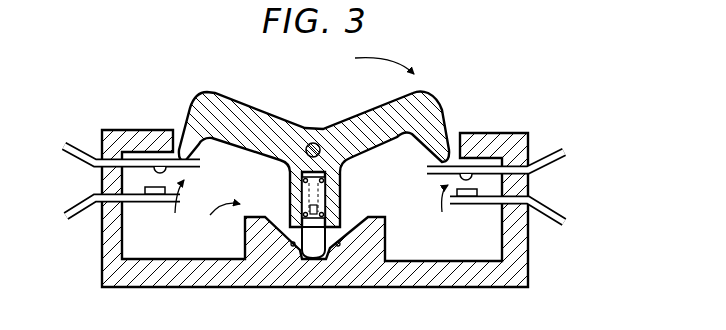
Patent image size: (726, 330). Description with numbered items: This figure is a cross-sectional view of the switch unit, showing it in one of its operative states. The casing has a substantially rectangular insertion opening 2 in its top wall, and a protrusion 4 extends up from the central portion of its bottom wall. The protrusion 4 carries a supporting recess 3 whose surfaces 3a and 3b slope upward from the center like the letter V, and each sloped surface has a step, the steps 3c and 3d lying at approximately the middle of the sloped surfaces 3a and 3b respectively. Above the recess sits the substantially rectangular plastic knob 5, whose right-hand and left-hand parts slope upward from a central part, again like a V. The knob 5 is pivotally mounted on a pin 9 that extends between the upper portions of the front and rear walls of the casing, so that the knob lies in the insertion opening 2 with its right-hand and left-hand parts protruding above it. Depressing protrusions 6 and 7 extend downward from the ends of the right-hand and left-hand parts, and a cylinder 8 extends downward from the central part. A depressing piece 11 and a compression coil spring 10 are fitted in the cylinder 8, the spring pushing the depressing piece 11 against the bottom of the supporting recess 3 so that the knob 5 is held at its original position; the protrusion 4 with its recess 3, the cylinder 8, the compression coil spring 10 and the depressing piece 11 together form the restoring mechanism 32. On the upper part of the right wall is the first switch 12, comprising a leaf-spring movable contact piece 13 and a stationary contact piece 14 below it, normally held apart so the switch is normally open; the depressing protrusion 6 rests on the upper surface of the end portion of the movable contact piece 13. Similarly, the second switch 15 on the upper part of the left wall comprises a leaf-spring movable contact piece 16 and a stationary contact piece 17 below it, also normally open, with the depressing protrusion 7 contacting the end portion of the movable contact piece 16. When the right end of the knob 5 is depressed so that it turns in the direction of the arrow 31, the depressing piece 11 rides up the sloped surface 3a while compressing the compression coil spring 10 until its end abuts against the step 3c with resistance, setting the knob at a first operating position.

The insertion opening 2 is at (178, 140).
The supporting recess 3 is at (343, 238).
The sloped surface 3a is at (259, 251).
The sloped surface 3b is at (370, 214).
The step 3c is at (311, 250).
The step 3d is at (336, 250).
The protrusion 4 is at (386, 222).
The knob 5 is at (313, 128).
The depressing protrusion 6 is at (422, 147).
The depressing protrusion 7 is at (206, 140).
The cylinder 8 is at (289, 185).
The pin 9 is at (324, 148).
The compression coil spring 10 is at (341, 172).
The depressing piece 11 is at (295, 242).
The first switch 12 is at (495, 195).
The movable contact piece 13 is at (488, 134).
The stationary contact piece 14 is at (478, 207).
The second switch 15 is at (185, 203).
The movable contact piece 16 is at (140, 130).
The stationary contact piece 17 is at (141, 205).
The arrow 31 is at (407, 56).
The restoring mechanism 32 is at (207, 210).